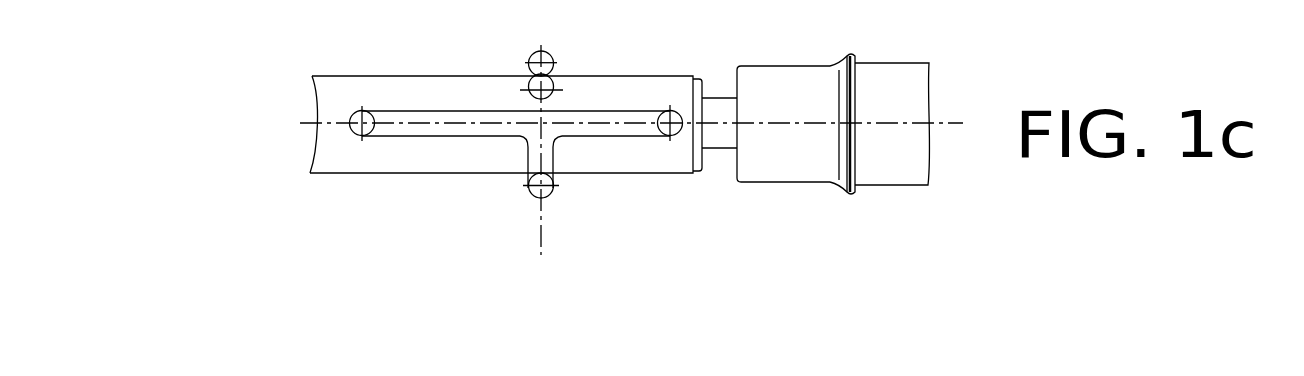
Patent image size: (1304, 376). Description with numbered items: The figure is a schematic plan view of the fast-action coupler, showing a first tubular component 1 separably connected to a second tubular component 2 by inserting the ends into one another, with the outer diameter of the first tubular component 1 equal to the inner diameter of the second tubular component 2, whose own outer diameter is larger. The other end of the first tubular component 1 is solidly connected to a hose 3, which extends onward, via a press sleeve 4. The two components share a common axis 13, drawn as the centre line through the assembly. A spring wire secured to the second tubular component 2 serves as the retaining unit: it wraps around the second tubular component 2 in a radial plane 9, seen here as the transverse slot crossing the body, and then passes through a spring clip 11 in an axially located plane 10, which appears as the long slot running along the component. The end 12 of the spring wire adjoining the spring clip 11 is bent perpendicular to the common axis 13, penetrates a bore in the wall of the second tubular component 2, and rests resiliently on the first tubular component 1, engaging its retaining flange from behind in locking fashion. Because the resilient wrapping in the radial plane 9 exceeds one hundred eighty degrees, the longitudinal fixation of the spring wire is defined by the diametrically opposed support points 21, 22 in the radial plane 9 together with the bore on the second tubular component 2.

The first tubular component 1 is at (715, 150).
The second tubular component 2 is at (338, 80).
The hose 3 is at (880, 186).
The press sleeve 4 is at (808, 183).
The radial plane 9 is at (540, 203).
The axially located plane 10 is at (433, 112).
The spring clip 11 is at (398, 136).
The end of the spring wire 12 is at (672, 136).
The common axis 13 is at (942, 125).
The support point 21 is at (555, 66).
The support point 22 is at (530, 196).